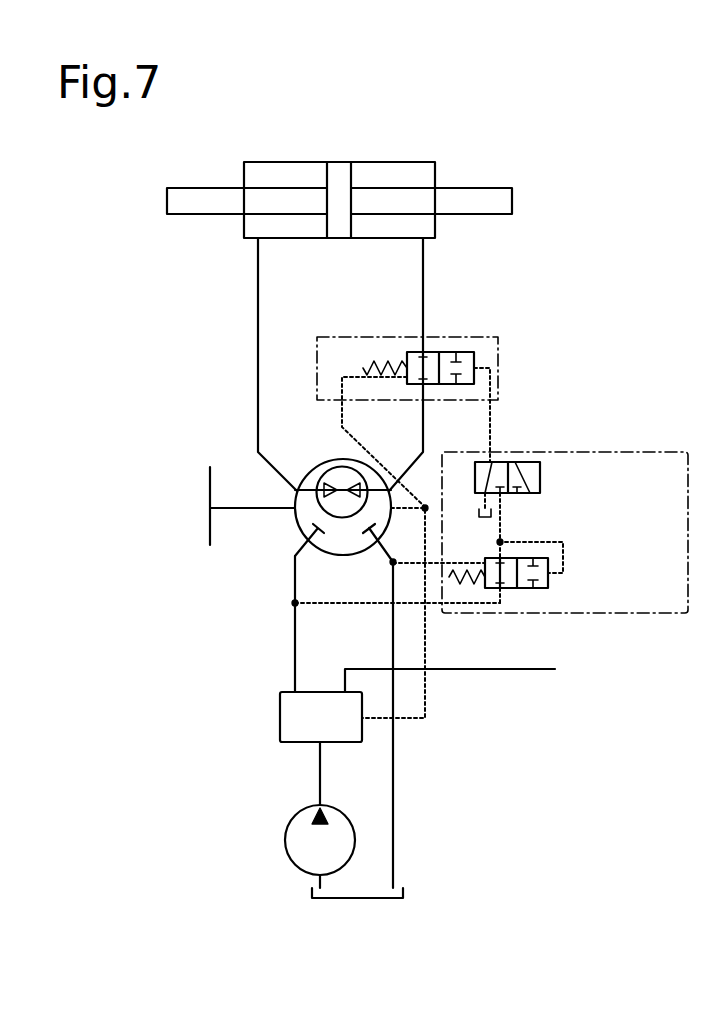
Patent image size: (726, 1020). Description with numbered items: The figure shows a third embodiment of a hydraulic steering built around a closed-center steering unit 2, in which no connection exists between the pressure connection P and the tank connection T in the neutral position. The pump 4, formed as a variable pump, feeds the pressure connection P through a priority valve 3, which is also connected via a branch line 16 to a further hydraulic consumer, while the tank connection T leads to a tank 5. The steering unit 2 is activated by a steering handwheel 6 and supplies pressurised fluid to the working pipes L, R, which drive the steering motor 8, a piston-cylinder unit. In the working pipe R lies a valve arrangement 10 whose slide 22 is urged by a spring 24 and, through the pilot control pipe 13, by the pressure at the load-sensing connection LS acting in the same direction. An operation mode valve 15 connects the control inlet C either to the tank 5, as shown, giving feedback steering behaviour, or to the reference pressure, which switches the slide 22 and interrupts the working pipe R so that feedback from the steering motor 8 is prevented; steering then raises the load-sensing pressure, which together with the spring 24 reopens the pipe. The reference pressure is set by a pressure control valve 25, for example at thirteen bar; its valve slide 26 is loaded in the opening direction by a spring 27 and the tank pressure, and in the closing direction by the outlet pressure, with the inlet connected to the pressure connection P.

The steering unit 2 is at (307, 512).
The priority valve 3 is at (288, 712).
The pump 4 is at (302, 848).
The tank 5 is at (362, 900).
The steering handwheel 6 is at (210, 485).
The steering motor 8 is at (287, 172).
The valve arrangement 10 is at (500, 358).
The pilot control pipe 13 is at (348, 434).
The operation mode valve 15 is at (540, 465).
The branch line 16 is at (517, 673).
The slide 22 is at (447, 360).
The spring 24 is at (365, 365).
The pressure control valve 25 is at (530, 600).
The valve slide 26 is at (548, 583).
The spring 27 is at (449, 577).